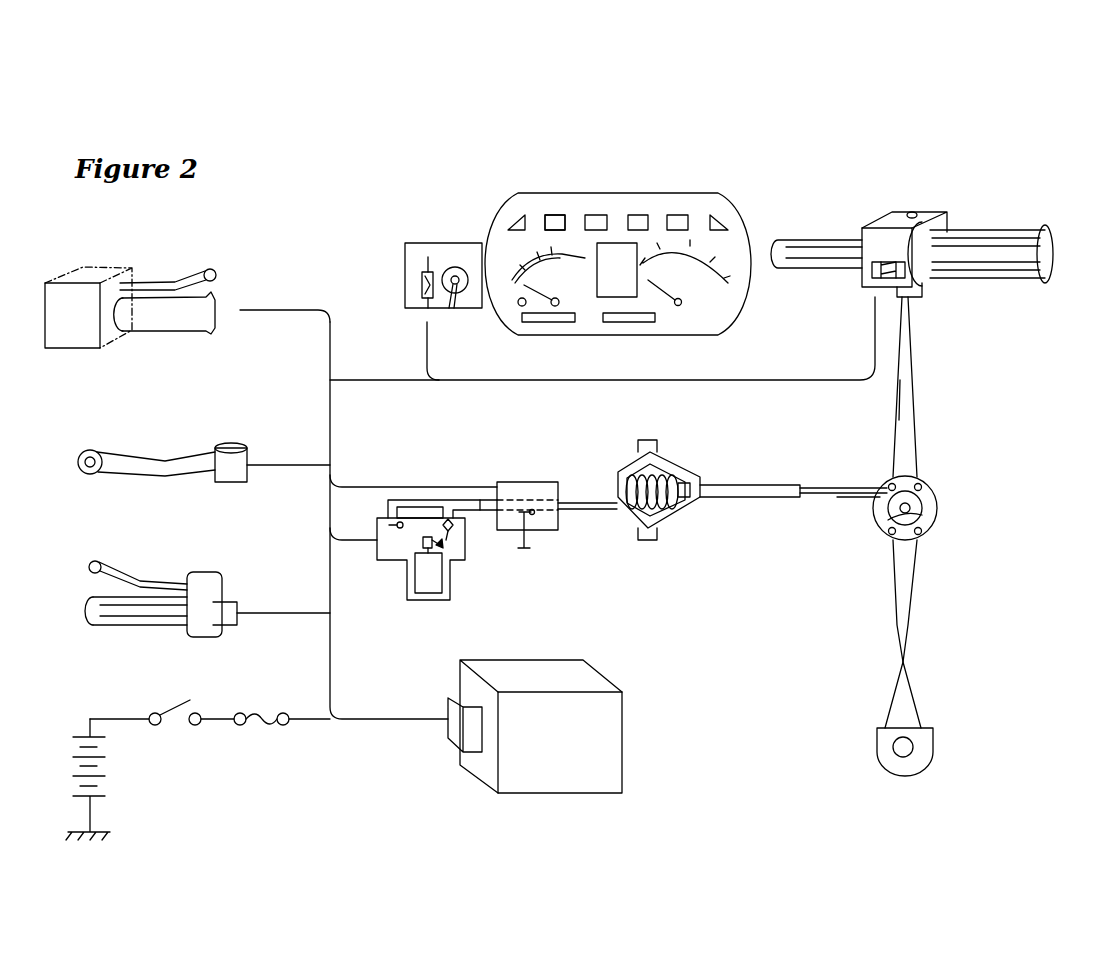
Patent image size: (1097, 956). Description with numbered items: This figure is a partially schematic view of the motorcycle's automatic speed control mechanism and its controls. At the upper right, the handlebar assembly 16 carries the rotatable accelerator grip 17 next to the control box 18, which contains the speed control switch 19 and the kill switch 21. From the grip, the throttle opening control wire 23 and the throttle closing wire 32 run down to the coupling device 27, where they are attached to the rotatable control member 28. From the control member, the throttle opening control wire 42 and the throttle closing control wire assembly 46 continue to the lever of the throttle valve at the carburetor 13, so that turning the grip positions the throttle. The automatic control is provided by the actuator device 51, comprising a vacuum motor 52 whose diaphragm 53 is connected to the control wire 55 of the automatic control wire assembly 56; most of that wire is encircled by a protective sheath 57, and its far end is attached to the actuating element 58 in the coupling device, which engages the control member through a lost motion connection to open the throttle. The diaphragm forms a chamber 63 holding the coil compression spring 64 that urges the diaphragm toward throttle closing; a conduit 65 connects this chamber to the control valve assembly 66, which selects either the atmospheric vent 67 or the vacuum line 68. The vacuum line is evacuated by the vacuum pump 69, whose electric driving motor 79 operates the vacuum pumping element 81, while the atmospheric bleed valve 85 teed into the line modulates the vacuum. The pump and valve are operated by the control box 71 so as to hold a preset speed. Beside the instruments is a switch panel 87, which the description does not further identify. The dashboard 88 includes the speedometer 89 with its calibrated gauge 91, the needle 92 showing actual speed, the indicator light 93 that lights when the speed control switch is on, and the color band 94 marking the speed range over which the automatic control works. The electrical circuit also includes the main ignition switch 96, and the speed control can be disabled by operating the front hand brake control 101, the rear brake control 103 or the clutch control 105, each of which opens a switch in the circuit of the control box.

The carburetor 13 is at (945, 755).
The handlebar assembly 16 is at (988, 200).
The accelerator grip 17 is at (992, 270).
The control box 18 is at (875, 203).
The speed control switch 19 is at (873, 283).
The kill switch 21 is at (918, 214).
The throttle opening control wire 23 is at (912, 418).
The coupling device 27 is at (945, 487).
The rotatable control member 28 is at (930, 528).
The throttle closing wire 32 is at (893, 400).
The throttle opening control wire 42 is at (925, 607).
The throttle closing control wire assembly 46 is at (895, 613).
The actuator device 51 is at (705, 468).
The vacuum motor 52 is at (700, 512).
The diaphragm 53 is at (650, 528).
The control wire 55 is at (815, 497).
The automatic control wire assembly 56 is at (765, 478).
The protective sheath 57 is at (762, 500).
The actuating element 58 is at (890, 516).
The chamber 63 is at (652, 465).
The coil compression spring 64 is at (640, 472).
The conduit 65 is at (575, 510).
The control valve assembly 66 is at (509, 466).
The atmospheric vent 67 is at (530, 547).
The vacuum line 68 is at (480, 512).
The vacuum pump 69 is at (393, 578).
The control box 71 is at (549, 660).
The electric driving motor 79 is at (432, 578).
The vacuum pumping element 81 is at (445, 543).
The atmospheric bleed valve 85 is at (390, 528).
The ignition switch panel 87 is at (403, 277).
The dashboard 88 is at (672, 193).
The speedometer 89 is at (538, 222).
The calibrated gauge 91 is at (566, 252).
The needle 92 is at (540, 305).
The indicator light 93 is at (515, 305).
The color band 94 is at (545, 270).
The main ignition switch 96 is at (175, 705).
The front hand brake control 101 is at (155, 282).
The rear brake control 103 is at (125, 462).
The clutch control 105 is at (145, 578).